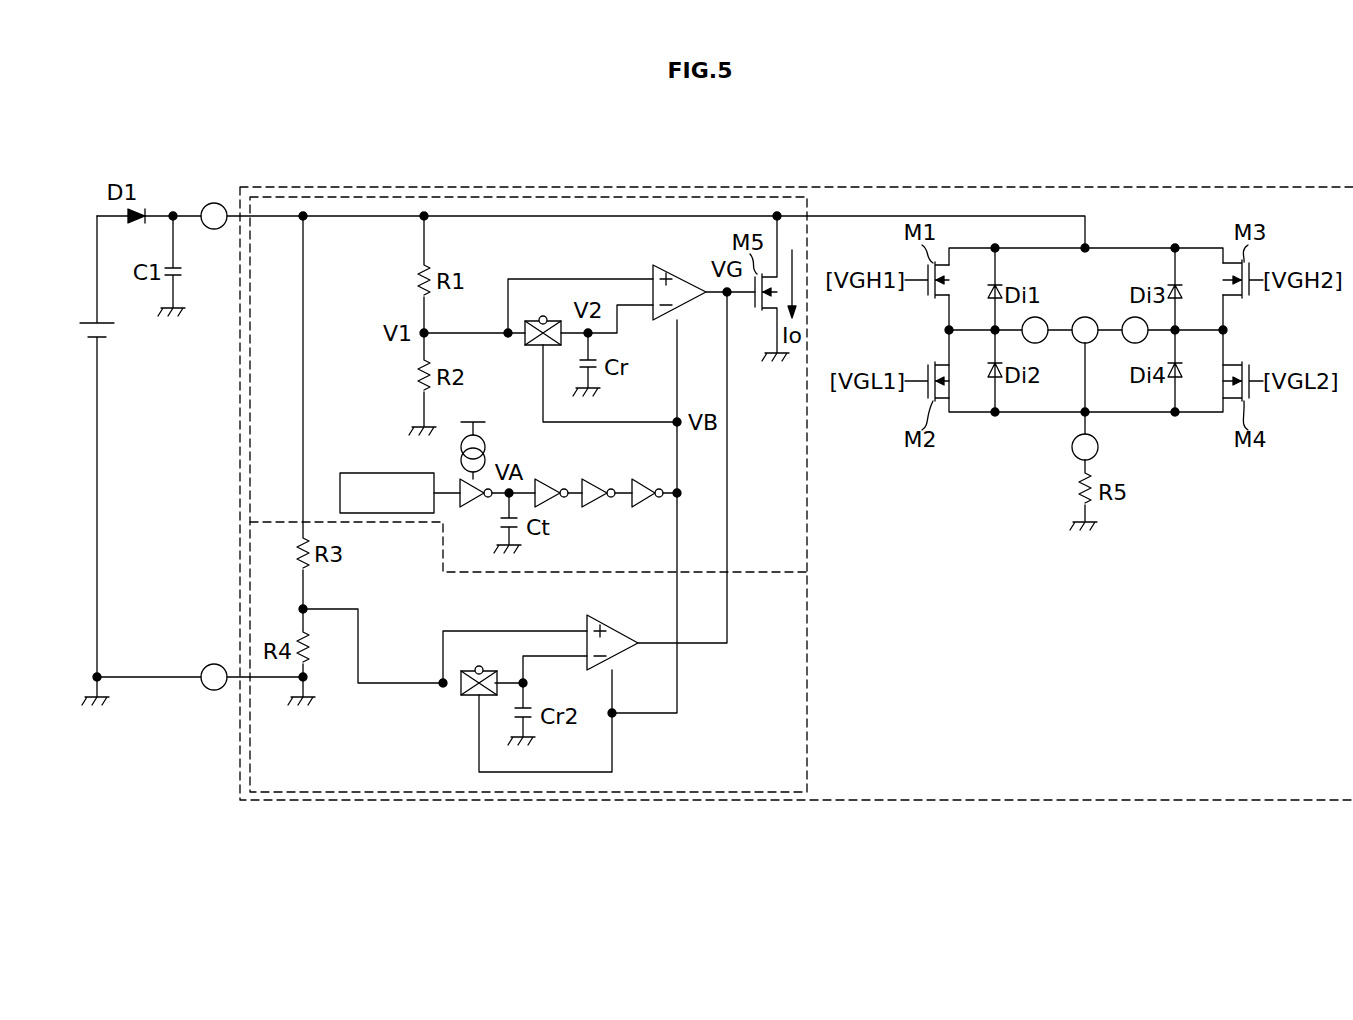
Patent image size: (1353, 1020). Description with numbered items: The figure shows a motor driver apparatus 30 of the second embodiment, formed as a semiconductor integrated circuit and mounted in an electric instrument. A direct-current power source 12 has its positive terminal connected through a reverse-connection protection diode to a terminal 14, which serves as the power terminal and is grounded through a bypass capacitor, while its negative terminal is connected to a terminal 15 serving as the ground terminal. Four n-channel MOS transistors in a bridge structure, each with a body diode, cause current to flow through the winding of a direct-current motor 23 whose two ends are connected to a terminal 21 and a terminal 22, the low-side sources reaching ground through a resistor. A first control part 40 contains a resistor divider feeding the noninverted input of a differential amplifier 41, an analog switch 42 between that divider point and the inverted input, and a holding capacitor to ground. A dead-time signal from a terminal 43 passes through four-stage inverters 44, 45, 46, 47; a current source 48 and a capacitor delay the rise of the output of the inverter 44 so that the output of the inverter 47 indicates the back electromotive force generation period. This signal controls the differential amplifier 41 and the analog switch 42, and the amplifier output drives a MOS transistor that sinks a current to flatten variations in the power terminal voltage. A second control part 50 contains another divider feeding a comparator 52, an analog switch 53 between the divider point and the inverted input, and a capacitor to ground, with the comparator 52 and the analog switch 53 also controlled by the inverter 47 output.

The direct-current power source 12 is at (88, 320).
The terminal 14 is at (205, 206).
The terminal 15 is at (214, 664).
The terminal 21 is at (1042, 318).
The terminal 22 is at (1128, 318).
The direct-current motor 23 is at (1085, 345).
The motor driver apparatus 30 is at (1197, 184).
The first control part 40 is at (807, 492).
The differential amplifier 41 is at (684, 270).
The analog switch 42 is at (541, 350).
The terminal 43 is at (366, 472).
The inverter 44 is at (480, 510).
The inverter 45 is at (550, 477).
The inverter 46 is at (598, 477).
The inverter 47 is at (647, 477).
The current source 48 is at (485, 445).
The second control part 50 is at (807, 652).
The comparator 52 is at (614, 625).
The analog switch 53 is at (470, 700).